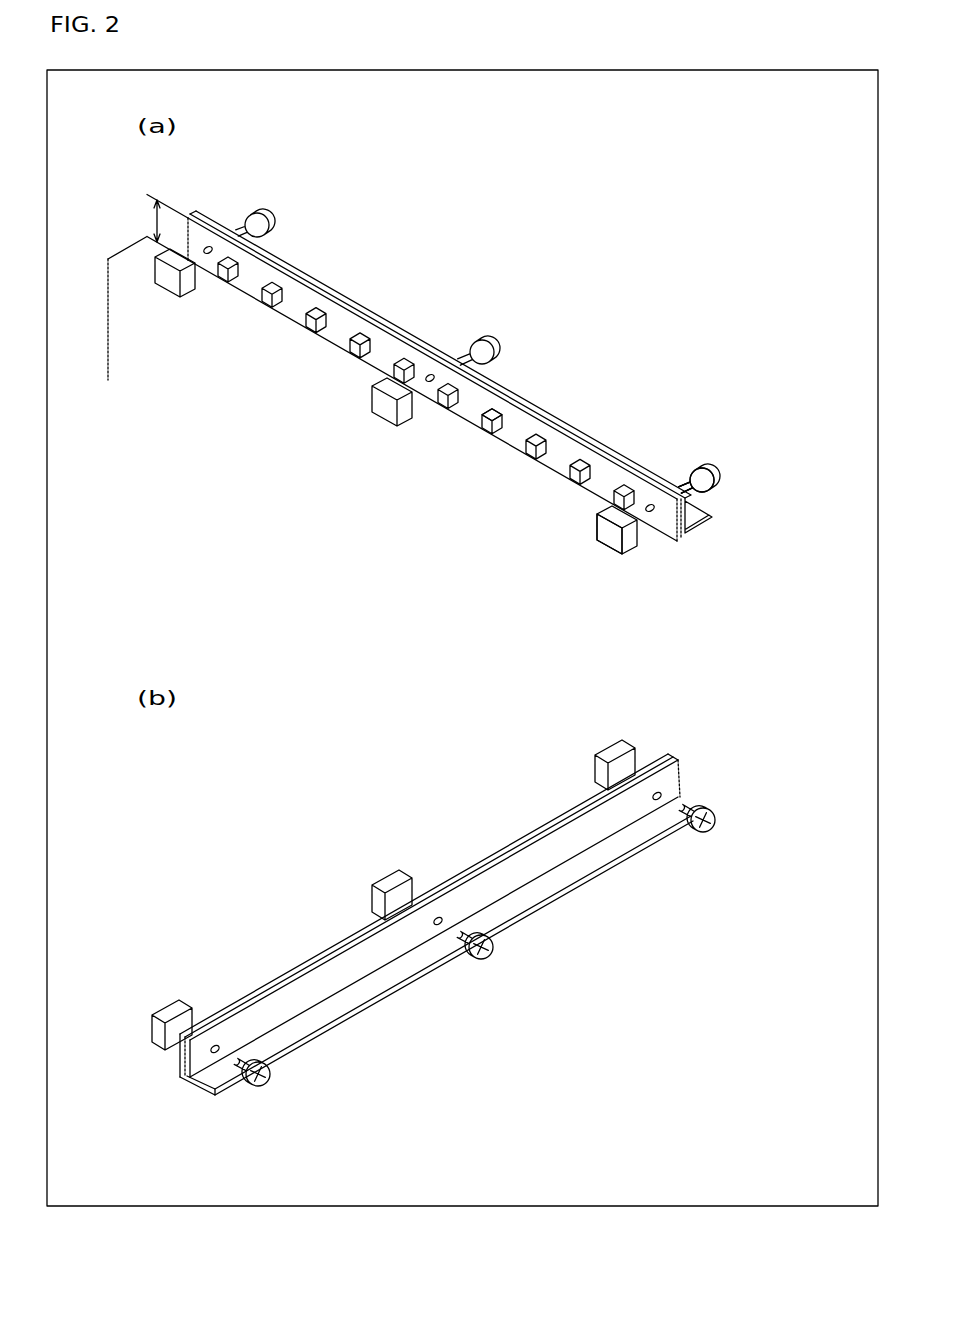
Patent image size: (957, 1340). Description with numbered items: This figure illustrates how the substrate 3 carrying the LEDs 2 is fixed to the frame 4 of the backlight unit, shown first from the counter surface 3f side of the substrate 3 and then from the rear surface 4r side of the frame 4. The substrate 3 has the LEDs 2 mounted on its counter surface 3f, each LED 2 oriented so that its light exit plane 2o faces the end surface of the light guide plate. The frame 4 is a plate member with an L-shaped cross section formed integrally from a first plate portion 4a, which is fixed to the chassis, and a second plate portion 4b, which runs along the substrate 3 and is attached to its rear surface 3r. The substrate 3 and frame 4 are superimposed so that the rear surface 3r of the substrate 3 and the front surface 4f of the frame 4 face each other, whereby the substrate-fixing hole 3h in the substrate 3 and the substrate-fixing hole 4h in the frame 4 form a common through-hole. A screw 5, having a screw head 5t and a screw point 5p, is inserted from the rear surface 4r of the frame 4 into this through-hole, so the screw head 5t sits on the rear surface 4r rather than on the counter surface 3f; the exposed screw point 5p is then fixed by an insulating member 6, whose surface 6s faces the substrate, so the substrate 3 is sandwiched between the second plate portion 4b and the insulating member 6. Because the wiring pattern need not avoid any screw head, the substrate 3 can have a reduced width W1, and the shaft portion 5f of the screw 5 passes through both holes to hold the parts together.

The LED 2 is at (478, 419).
The light exit plane 2o is at (490, 426).
The substrate 3 is at (674, 550).
The counter surface 3f is at (516, 437).
The substrate-fixing hole 3h is at (430, 383).
The rear surface 3r is at (192, 217).
The frame 4 is at (728, 512).
The first plate portion 4a is at (364, 994).
The second plate portion 4b is at (600, 828).
The front surface 4f is at (440, 327).
The substrate-fixing hole 4h is at (216, 1044).
The rear surface 4r is at (542, 871).
The screw 5 is at (730, 474).
The screw shaft 5f is at (688, 482).
The screw point 5p is at (679, 489).
The screw head 5t is at (703, 466).
The insulating member 6 is at (164, 301).
The surface of insulating member 6s is at (610, 533).
The width W1 is at (144, 299).